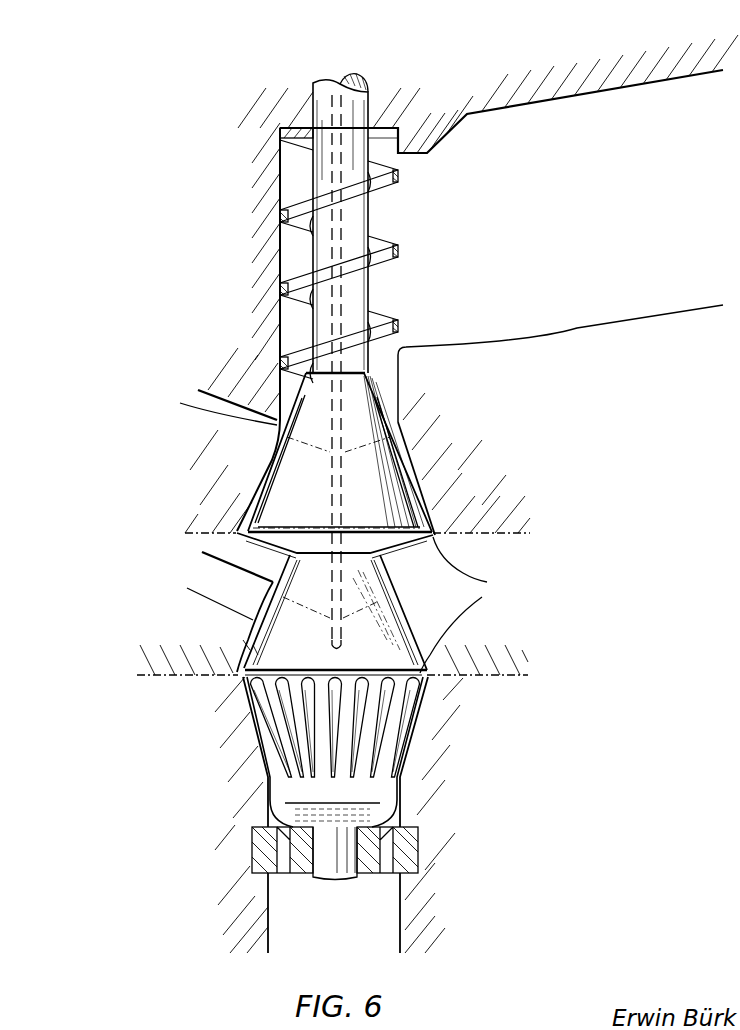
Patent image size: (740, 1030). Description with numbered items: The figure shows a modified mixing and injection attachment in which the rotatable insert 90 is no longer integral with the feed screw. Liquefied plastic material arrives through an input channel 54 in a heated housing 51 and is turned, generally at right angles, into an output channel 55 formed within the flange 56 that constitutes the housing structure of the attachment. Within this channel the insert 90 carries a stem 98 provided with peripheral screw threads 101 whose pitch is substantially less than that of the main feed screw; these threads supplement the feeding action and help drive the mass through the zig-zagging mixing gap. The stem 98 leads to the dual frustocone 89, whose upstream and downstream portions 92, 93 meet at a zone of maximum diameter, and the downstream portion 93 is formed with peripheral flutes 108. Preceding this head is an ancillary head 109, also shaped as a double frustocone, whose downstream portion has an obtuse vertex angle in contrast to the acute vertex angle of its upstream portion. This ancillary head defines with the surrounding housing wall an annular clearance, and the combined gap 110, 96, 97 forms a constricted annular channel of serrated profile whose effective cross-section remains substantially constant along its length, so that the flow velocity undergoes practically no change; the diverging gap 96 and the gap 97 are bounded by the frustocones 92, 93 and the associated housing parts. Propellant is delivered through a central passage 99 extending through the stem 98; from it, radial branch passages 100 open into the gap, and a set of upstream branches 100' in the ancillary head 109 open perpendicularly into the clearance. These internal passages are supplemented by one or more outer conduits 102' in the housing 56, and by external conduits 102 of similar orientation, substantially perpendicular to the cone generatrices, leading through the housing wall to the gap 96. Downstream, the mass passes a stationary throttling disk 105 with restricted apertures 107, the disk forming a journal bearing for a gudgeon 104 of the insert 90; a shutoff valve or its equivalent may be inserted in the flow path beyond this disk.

The heated housing 51 is at (594, 100).
The input channel 54 is at (463, 253).
The output channel 55 is at (287, 168).
The flange 56 is at (267, 280).
The stem 98 is at (278, 246).
The screw threads 101 is at (393, 247).
The outer conduits 102' is at (186, 402).
The upstream branches 100' is at (382, 451).
The gap 110 is at (407, 452).
The ancillary head 109 is at (410, 505).
The central passage 99 is at (328, 503).
The external conduits 102 is at (189, 570).
The rotatable insert 90 is at (464, 745).
The radial branch passages 100 is at (335, 615).
The annular gap 96 is at (243, 643).
The upstream frustocone portion 92 is at (253, 648).
The dual frustocone 89 is at (233, 660).
The annular gap 97 is at (248, 716).
The downstream frustocone portion 93 is at (273, 758).
The peripheral flutes 108 is at (400, 715).
The restricted apertures 107 is at (277, 850).
The stationary disk 105 is at (410, 853).
The gudgeon 104 is at (330, 867).